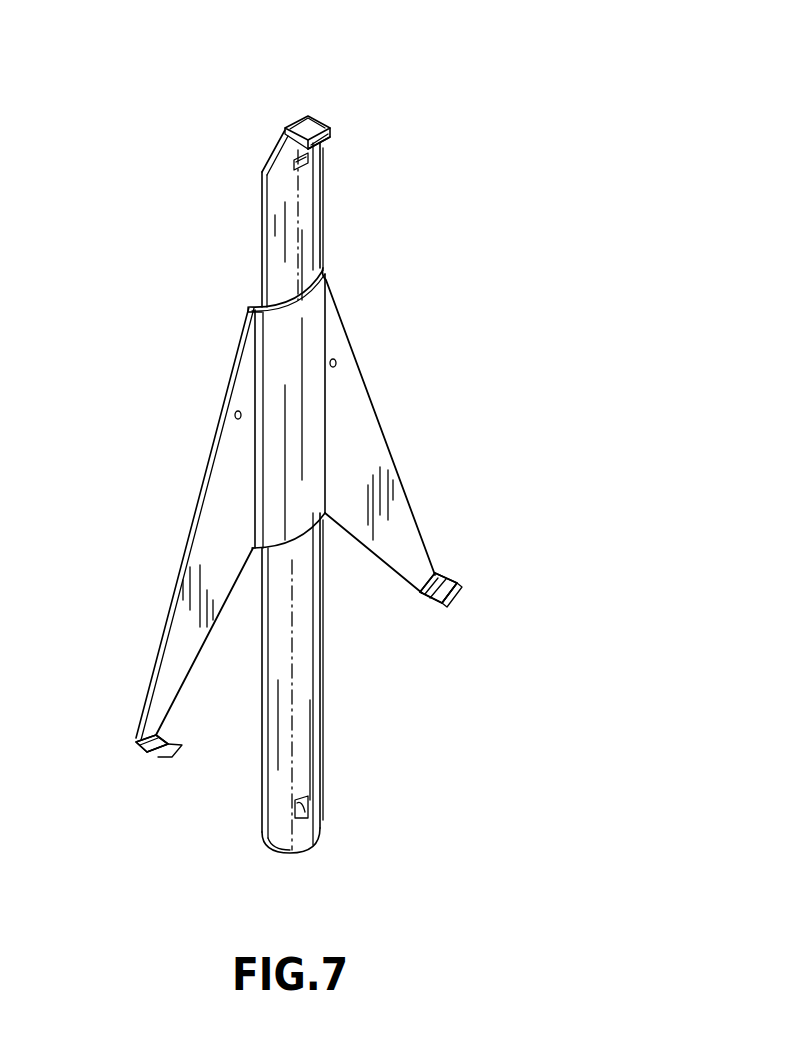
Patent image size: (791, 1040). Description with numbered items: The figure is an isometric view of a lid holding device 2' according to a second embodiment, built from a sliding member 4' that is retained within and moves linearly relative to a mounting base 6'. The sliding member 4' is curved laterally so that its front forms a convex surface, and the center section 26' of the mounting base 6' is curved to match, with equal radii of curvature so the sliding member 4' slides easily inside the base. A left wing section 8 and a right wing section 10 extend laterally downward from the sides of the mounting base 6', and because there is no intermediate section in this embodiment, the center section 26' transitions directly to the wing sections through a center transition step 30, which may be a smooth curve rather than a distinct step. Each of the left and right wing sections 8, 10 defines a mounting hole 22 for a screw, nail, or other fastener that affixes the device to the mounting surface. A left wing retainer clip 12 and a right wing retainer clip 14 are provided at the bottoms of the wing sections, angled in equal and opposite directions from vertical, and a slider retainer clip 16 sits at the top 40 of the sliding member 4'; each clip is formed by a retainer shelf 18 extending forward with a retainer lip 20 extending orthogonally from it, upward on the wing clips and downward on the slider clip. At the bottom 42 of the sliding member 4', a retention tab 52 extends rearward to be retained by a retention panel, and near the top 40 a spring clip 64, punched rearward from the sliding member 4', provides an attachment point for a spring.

The lid holding device 2' is at (149, 226).
The sliding member 4' is at (323, 491).
The mounting base 6' is at (378, 419).
The left wing section 8 is at (202, 538).
The right wing section 10 is at (405, 518).
The left wing retainer clip 12 is at (143, 753).
The right wing retainer clip 14 is at (447, 575).
The slider retainer clip 16 is at (318, 120).
The retainer shelf 18 is at (303, 122).
The retainer lip 20 is at (325, 138).
The mounting hole 22 is at (336, 360).
The center section 26' is at (345, 409).
The center transition step 30 is at (327, 392).
The top 40 is at (325, 102).
The bottom 42 is at (307, 857).
The retention tab 52 is at (308, 812).
The spring clip 64 is at (302, 162).